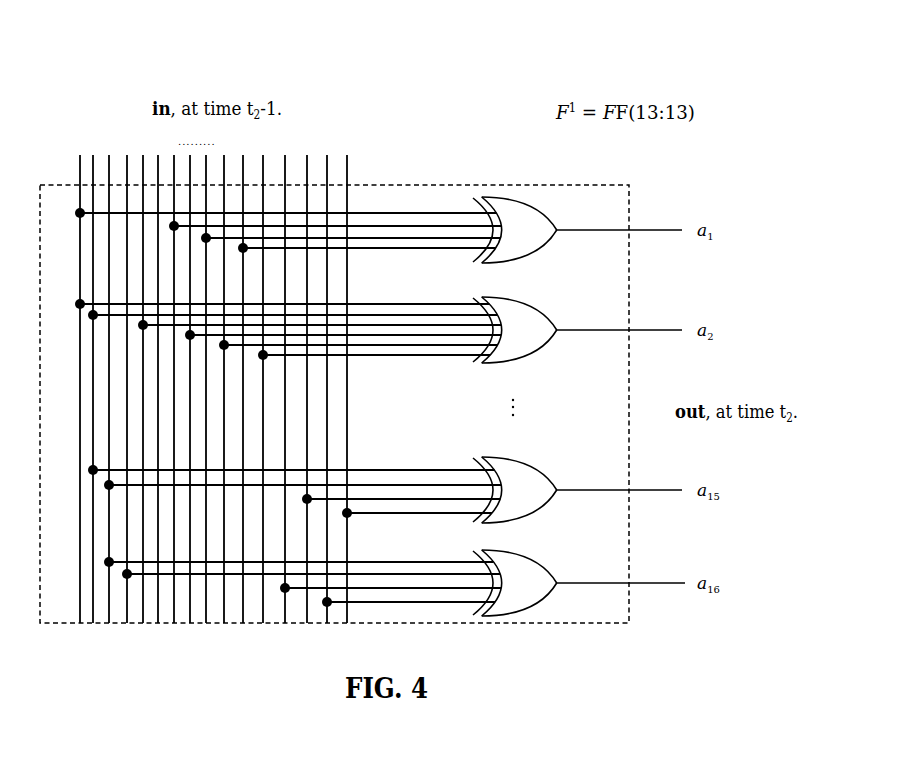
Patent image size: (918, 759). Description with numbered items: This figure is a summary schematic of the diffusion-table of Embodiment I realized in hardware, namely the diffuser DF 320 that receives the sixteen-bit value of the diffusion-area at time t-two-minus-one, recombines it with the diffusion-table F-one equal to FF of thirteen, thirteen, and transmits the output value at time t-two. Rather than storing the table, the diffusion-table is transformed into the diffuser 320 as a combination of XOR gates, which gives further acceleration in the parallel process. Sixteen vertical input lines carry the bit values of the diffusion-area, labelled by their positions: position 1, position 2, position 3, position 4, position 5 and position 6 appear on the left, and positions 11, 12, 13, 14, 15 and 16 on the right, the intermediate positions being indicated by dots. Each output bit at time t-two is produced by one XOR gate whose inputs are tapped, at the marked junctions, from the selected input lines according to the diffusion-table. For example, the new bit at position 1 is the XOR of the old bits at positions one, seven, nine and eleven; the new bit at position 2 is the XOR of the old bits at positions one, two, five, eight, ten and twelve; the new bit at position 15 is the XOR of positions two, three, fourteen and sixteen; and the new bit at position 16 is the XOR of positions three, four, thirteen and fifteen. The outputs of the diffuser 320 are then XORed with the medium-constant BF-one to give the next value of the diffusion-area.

The diffuser DF 320 is at (419, 184).
The bit value a1 at position one of the diffusion-area 1 is at (77, 379).
The bit value a2 at position two of the diffusion-area 2 is at (92, 379).
The bit value a3 at position three of the diffusion-area 3 is at (108, 379).
The bit value a4 at position four of the diffusion-area 4 is at (125, 379).
The bit value a5 at position five of the diffusion-area 5 is at (141, 379).
The bit value a6 at position six of the diffusion-area 6 is at (157, 379).
The bit value a11 at position eleven of the diffusion-area 11 is at (239, 379).
The bit value a12 at position twelve of the diffusion-area 12 is at (260, 379).
The bit value a13 at position thirteen of the diffusion-area 13 is at (283, 379).
The bit value a14 at position fourteen of the diffusion-area 14 is at (304, 379).
The bit value a15 at position fifteen of the diffusion-area 15 is at (325, 379).
The bit value a16 at position sixteen of the diffusion-area 16 is at (346, 379).